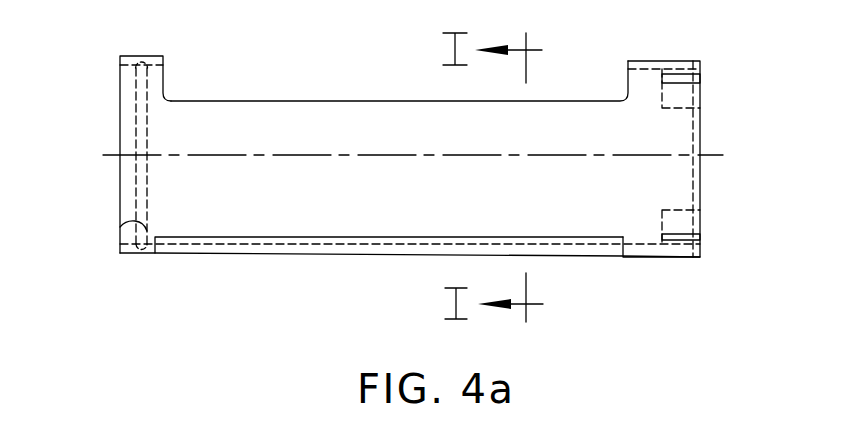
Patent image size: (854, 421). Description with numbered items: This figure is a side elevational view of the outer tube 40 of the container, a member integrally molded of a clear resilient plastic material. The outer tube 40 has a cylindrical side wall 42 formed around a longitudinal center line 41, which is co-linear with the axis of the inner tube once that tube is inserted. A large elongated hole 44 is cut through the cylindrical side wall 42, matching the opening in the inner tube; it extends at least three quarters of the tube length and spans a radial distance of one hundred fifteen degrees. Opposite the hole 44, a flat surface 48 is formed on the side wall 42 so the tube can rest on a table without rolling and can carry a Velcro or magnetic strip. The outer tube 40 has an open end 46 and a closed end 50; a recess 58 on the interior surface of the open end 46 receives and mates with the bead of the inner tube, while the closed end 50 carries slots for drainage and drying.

The outer tube 40 is at (418, 172).
The longitudinal center line 41 is at (625, 157).
The cylindrical side wall 42 is at (642, 257).
The elongated hole 44 is at (313, 86).
The open end 46 is at (120, 179).
The flat surface 48 is at (352, 256).
The closed end 50 is at (700, 122).
The recess 58 is at (120, 227).